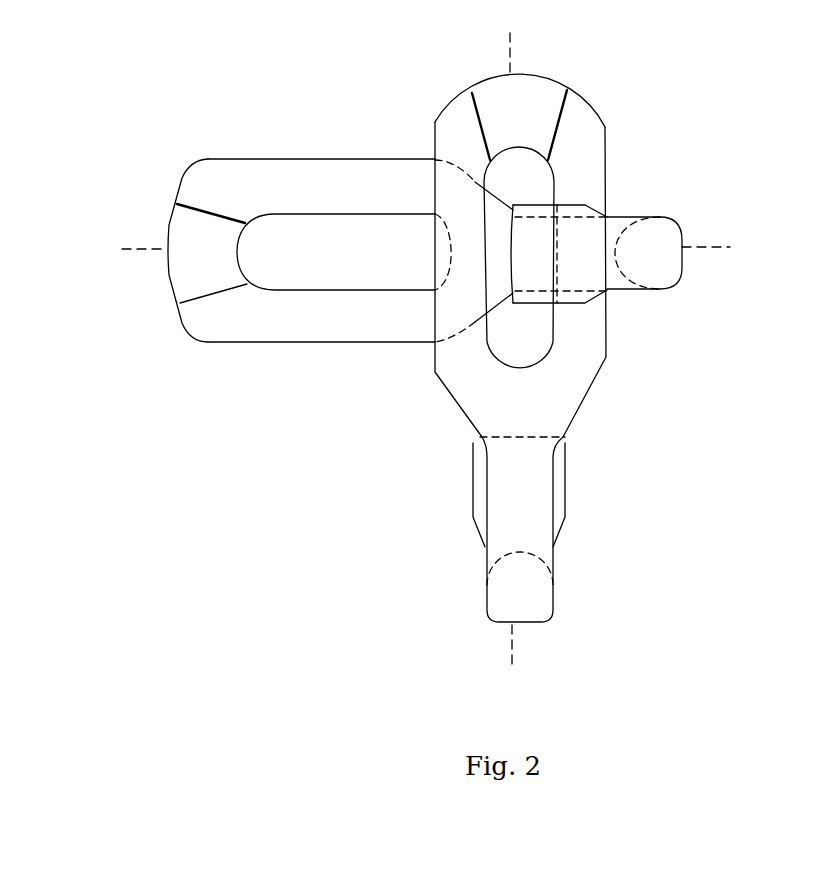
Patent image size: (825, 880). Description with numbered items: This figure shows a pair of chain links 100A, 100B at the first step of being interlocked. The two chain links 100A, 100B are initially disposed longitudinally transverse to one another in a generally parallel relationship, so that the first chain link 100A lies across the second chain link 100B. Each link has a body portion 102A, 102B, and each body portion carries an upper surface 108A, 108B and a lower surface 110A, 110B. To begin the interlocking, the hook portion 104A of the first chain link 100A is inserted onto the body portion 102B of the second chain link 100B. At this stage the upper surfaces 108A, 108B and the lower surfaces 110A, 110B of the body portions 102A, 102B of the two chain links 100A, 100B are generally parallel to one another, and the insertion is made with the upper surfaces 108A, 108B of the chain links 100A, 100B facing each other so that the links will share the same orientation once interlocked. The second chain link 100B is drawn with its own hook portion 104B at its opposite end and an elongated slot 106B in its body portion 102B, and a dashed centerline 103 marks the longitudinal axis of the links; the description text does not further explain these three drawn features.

The first chain link 100A is at (266, 254).
The second chain link 100B is at (573, 359).
The body portion of first chain link 102A is at (240, 328).
The body portion of second chain link 102B is at (447, 134).
The longitudinal axis 103 is at (707, 247).
The hook portion of first chain link 104A is at (667, 228).
The head of second coupling member 104B is at (540, 607).
The slot of second coupling member 106B is at (543, 181).
The upper surface of first chain link 108A is at (228, 183).
The upper surface of second chain link 108B is at (607, 318).
The lower surface of first chain link 110A is at (347, 347).
The lower surface of second chain link 110B is at (588, 367).